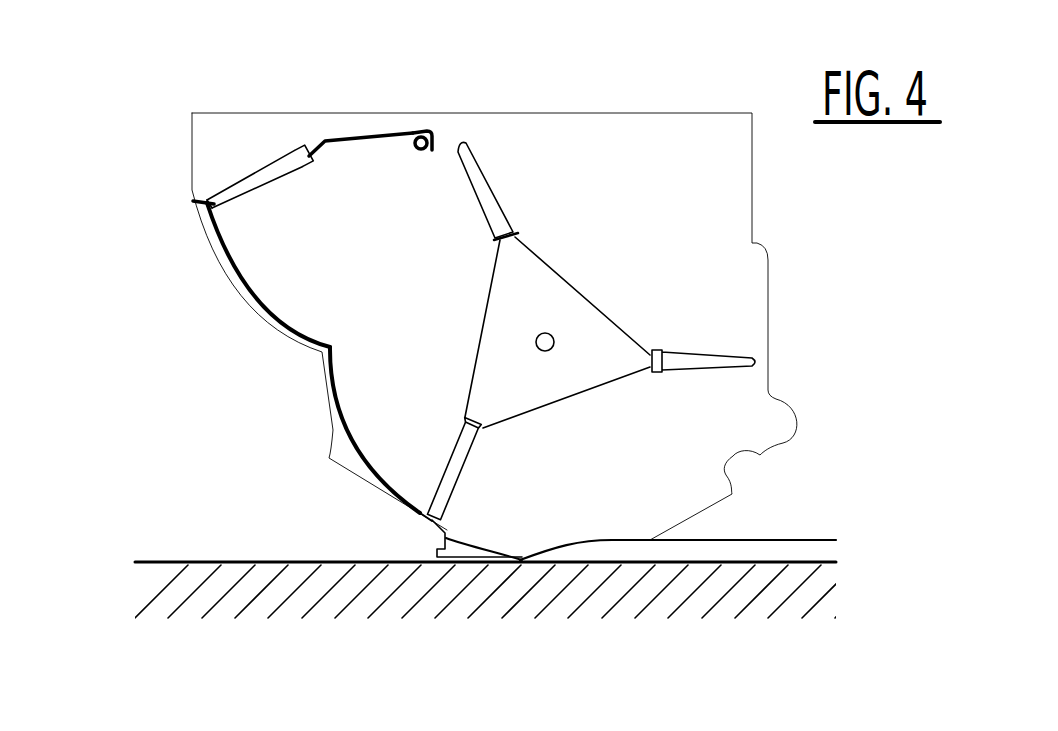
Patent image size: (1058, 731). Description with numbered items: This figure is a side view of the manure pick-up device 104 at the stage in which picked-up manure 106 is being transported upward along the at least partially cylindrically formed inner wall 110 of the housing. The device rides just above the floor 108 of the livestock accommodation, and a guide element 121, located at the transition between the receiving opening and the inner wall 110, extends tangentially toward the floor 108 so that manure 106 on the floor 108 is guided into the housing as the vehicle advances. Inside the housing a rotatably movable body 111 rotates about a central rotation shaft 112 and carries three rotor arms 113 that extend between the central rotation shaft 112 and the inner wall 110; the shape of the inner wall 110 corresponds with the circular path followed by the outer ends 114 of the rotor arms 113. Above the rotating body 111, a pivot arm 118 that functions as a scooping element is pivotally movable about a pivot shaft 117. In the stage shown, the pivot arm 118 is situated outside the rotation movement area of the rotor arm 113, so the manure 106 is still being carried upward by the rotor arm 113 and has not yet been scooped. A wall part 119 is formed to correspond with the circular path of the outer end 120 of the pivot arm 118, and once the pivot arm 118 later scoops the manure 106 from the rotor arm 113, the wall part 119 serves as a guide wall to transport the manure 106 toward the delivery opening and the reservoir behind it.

The manure pick-up device 104 is at (581, 88).
The manure 106 is at (403, 470).
The floor 108 is at (167, 530).
The inner wall 110 is at (356, 355).
The rotatably movable body 111 is at (543, 260).
The central rotation shaft 112 is at (551, 336).
The rotor arm 113 is at (460, 444).
The outer end of rotor arm 114 is at (395, 525).
The pivot shaft 117 is at (417, 130).
The pivot arm 118 is at (250, 180).
The wall part 119 is at (274, 266).
The outer end of pivot arm 120 is at (188, 224).
The guide element 121 is at (461, 548).